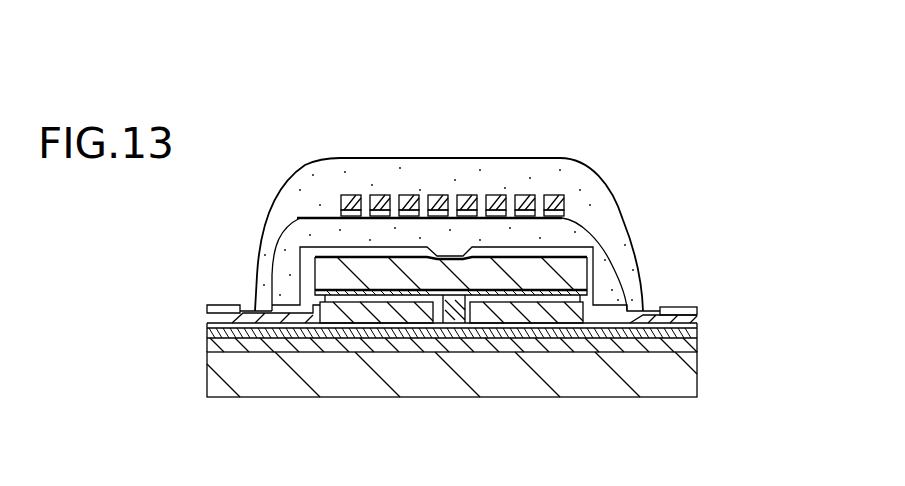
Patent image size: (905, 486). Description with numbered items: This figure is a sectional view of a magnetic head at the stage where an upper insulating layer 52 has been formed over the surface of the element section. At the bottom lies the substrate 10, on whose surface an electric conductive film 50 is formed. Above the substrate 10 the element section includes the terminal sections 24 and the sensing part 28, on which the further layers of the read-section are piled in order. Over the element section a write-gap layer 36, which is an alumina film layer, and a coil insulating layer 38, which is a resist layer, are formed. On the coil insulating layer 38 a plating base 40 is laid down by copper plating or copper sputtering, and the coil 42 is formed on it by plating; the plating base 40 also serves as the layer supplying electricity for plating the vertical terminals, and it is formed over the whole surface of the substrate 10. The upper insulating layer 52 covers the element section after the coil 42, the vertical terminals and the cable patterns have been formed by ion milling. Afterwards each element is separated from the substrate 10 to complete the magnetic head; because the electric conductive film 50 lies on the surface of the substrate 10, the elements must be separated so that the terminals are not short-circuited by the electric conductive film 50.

The substrate 10 is at (650, 386).
The terminal section 24 is at (532, 340).
The sensing part 28 is at (452, 333).
The write-gap layer 36 is at (578, 252).
The coil insulating layer 38 is at (565, 228).
The plating base 40 is at (383, 213).
The coil 42 is at (440, 195).
The electric conductive film 50 is at (680, 307).
The upper insulating layer 52 is at (530, 168).